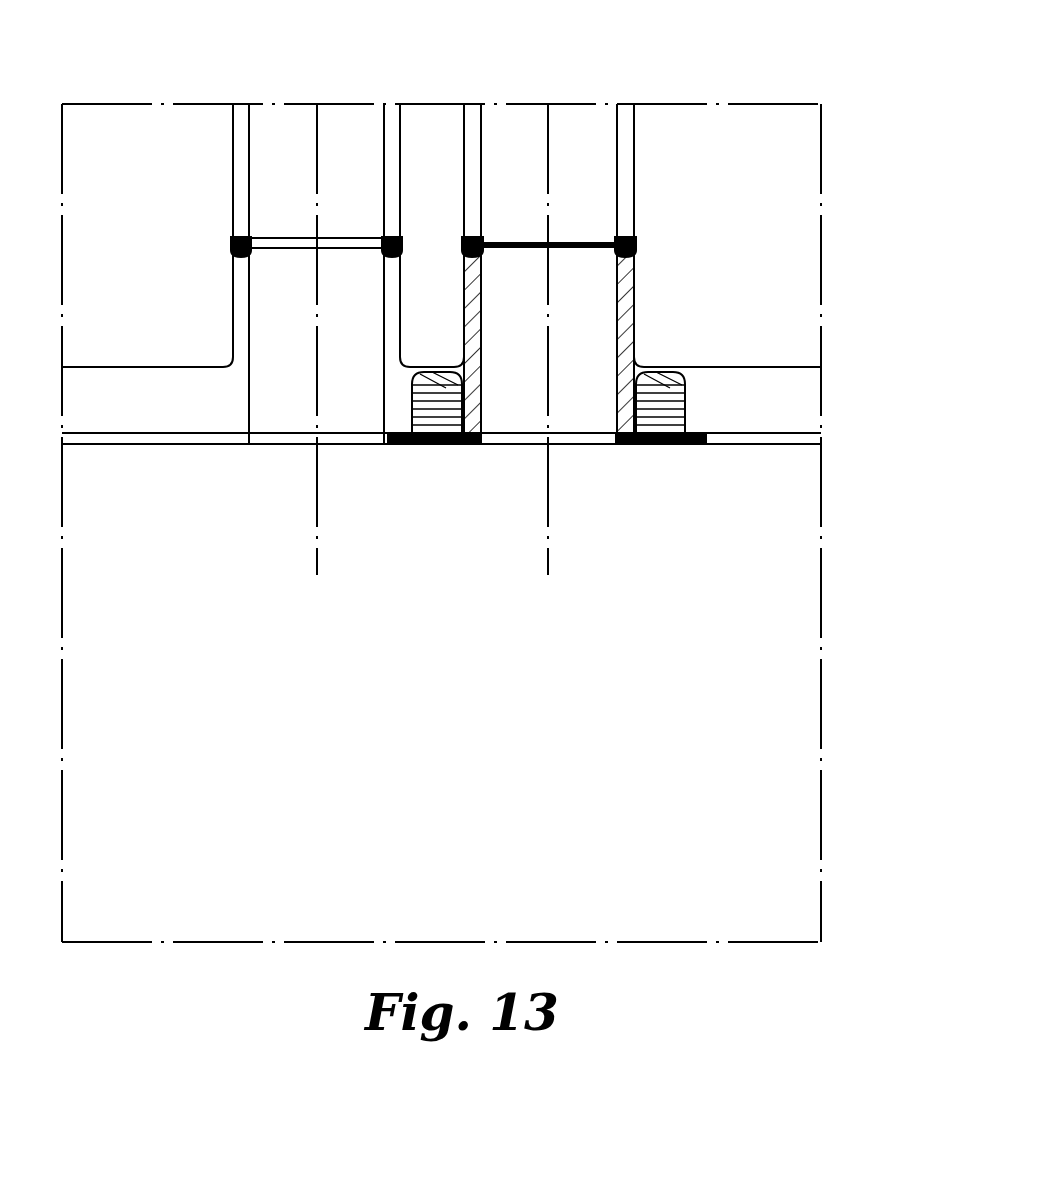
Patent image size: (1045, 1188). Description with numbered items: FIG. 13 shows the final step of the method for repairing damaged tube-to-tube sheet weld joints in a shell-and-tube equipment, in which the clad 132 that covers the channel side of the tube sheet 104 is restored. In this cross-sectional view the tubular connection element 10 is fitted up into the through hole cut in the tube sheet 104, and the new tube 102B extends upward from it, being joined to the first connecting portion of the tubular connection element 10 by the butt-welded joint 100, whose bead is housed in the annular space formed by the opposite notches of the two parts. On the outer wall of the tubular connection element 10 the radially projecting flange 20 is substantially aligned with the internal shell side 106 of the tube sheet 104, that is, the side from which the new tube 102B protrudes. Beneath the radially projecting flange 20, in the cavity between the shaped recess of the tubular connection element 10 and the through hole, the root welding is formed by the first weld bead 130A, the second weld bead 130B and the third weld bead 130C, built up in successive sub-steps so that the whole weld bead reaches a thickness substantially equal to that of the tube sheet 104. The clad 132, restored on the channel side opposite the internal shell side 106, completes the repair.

The tubular connection element 10 is at (652, 277).
The radially projecting flange 20 is at (432, 368).
The butt-welded joint 100 is at (637, 238).
The new tube 102B is at (634, 135).
The tube sheet 104 is at (790, 405).
The internal shell side 106 is at (780, 365).
The first weld bead 130A is at (663, 368).
The second weld bead 130B is at (681, 393).
The third weld bead 130C is at (652, 427).
The clad 132 is at (434, 447).